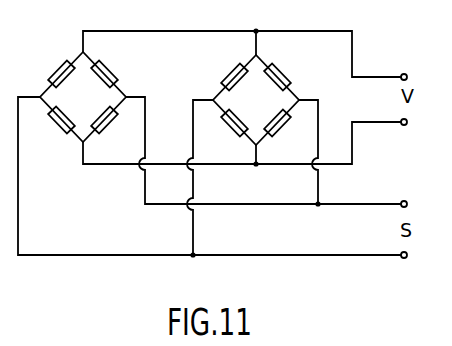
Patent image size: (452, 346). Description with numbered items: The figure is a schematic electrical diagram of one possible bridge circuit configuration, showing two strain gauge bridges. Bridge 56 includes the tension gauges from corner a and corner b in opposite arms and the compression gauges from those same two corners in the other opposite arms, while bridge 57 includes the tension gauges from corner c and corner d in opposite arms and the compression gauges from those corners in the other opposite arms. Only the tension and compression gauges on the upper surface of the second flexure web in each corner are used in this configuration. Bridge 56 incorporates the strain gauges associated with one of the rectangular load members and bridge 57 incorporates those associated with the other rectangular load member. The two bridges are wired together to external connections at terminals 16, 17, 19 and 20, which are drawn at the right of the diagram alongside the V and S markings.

The voltage supply terminal 16 is at (388, 77).
The voltage supply terminal 17 is at (383, 122).
The signal output terminal 19 is at (377, 204).
The signal output terminal 20 is at (347, 255).
The bridge 56 is at (92, 104).
The bridge 57 is at (265, 106).